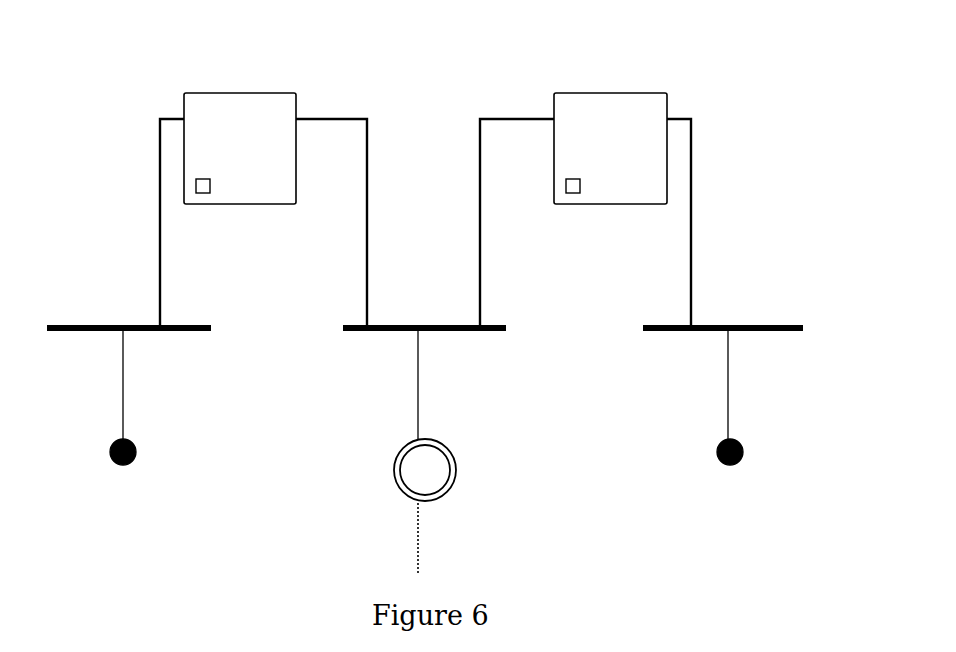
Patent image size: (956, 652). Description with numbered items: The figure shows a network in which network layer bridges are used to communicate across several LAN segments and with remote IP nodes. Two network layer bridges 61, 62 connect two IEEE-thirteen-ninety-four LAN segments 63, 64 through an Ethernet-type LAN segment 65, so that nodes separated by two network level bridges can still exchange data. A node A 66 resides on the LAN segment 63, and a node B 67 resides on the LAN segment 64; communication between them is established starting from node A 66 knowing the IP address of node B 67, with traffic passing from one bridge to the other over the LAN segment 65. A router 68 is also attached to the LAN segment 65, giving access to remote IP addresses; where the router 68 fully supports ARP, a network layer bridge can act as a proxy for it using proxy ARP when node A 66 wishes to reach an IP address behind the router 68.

The network layer bridge 61 is at (274, 105).
The network layer bridge 62 is at (590, 117).
The 1394 LAN segment 63 is at (72, 324).
The 1394 LAN segment 64 is at (766, 324).
The 802.3 LAN segment 65 is at (507, 316).
The node A 66 is at (136, 468).
The node B 67 is at (716, 466).
The router 68 is at (445, 437).